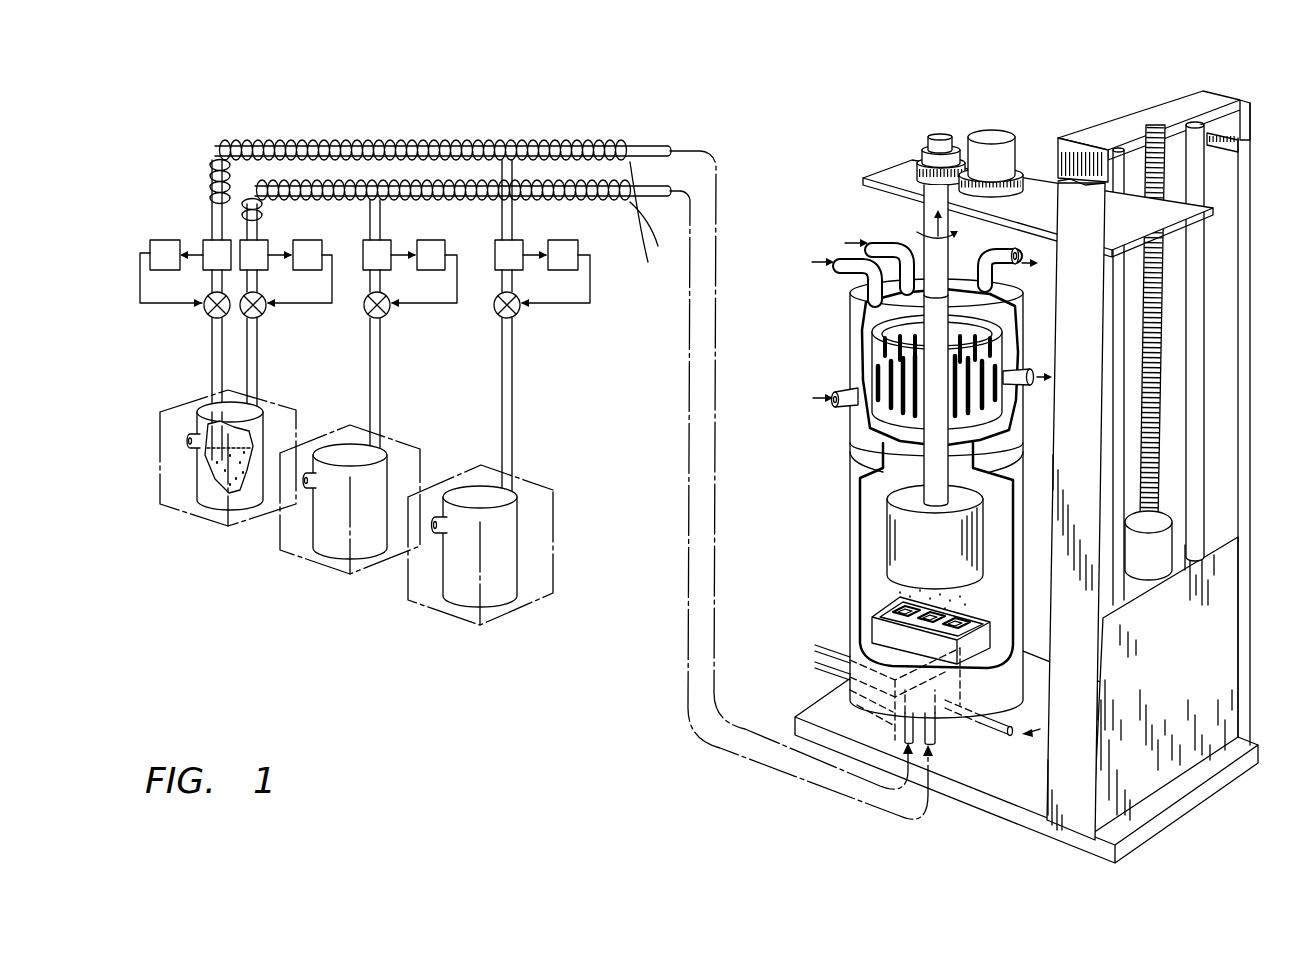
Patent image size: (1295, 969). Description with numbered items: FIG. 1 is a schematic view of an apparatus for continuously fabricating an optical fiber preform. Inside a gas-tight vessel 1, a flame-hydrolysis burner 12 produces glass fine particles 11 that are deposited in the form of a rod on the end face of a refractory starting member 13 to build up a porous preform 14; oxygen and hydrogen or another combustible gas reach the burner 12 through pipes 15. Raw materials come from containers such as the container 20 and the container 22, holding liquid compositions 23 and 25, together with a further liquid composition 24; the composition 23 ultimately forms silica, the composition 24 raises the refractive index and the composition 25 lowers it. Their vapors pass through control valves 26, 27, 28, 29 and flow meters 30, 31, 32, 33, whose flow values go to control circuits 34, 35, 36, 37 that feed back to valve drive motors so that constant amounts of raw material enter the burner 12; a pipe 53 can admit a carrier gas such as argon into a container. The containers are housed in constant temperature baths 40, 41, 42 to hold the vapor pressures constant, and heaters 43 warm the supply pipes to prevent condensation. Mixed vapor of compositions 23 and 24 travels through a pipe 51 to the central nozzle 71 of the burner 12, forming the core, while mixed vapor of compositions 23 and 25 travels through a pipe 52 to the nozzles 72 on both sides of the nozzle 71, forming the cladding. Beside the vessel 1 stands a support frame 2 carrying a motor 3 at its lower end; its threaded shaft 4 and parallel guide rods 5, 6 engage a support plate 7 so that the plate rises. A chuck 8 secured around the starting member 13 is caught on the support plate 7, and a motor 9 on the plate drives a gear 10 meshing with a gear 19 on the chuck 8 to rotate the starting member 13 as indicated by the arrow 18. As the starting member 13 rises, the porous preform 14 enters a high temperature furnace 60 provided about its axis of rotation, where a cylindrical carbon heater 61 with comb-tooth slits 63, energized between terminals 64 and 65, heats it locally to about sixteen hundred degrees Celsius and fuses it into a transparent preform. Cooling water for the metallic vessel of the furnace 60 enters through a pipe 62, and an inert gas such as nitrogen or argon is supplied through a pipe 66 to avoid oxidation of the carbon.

The gas-tight vessel 1 is at (852, 512).
The support frame 2 is at (1236, 618).
The motor 3 is at (1147, 573).
The threaded shaft 4 is at (1160, 445).
The guide rod 5 is at (1115, 473).
The guide rod 6 is at (1196, 497).
The support plate 7 is at (863, 178).
The chuck 8 is at (923, 152).
The motor 9 is at (980, 130).
The gear 10 is at (1027, 173).
The glass fine particles 11 is at (996, 599).
The flame-hydrolysis burner 12 is at (883, 637).
The starting member 13 is at (937, 135).
The porous preform 14 is at (903, 559).
The pipes 15 is at (803, 640).
The arrow 18 is at (926, 217).
The gear 19 is at (918, 165).
The container 20 is at (241, 527).
The container 22 is at (447, 577).
The liquid composition 23 is at (222, 478).
The liquid composition 24 is at (330, 522).
The liquid composition 25 is at (495, 590).
The control valve 26 is at (263, 313).
The control valve 27 is at (388, 313).
The control valve 28 is at (520, 318).
The control valve 29 is at (205, 315).
The flow meter 30 is at (263, 243).
The flow meter 31 is at (387, 243).
The flow meter 32 is at (522, 243).
The flow meter 33 is at (208, 240).
The control circuit 34 is at (313, 243).
The control circuit 35 is at (430, 243).
The control circuit 36 is at (568, 252).
The control circuit 37 is at (160, 240).
The constant temperature bath 40 is at (228, 500).
The constant temperature bath 41 is at (327, 570).
The constant temperature bath 42 is at (458, 620).
The heaters 43 is at (575, 143).
The pipe 51 is at (658, 187).
The pipe 52 is at (645, 147).
The pipe 53 is at (187, 438).
The high temperature furnace 60 is at (850, 313).
The carbon heater 61 is at (868, 358).
The pipe 62 is at (885, 240).
The slits 63 is at (898, 403).
The terminal 64 is at (845, 407).
The terminal 65 is at (1033, 383).
The pipe 66 is at (843, 276).
The nozzle 71 is at (907, 627).
The nozzles 72 is at (900, 599).